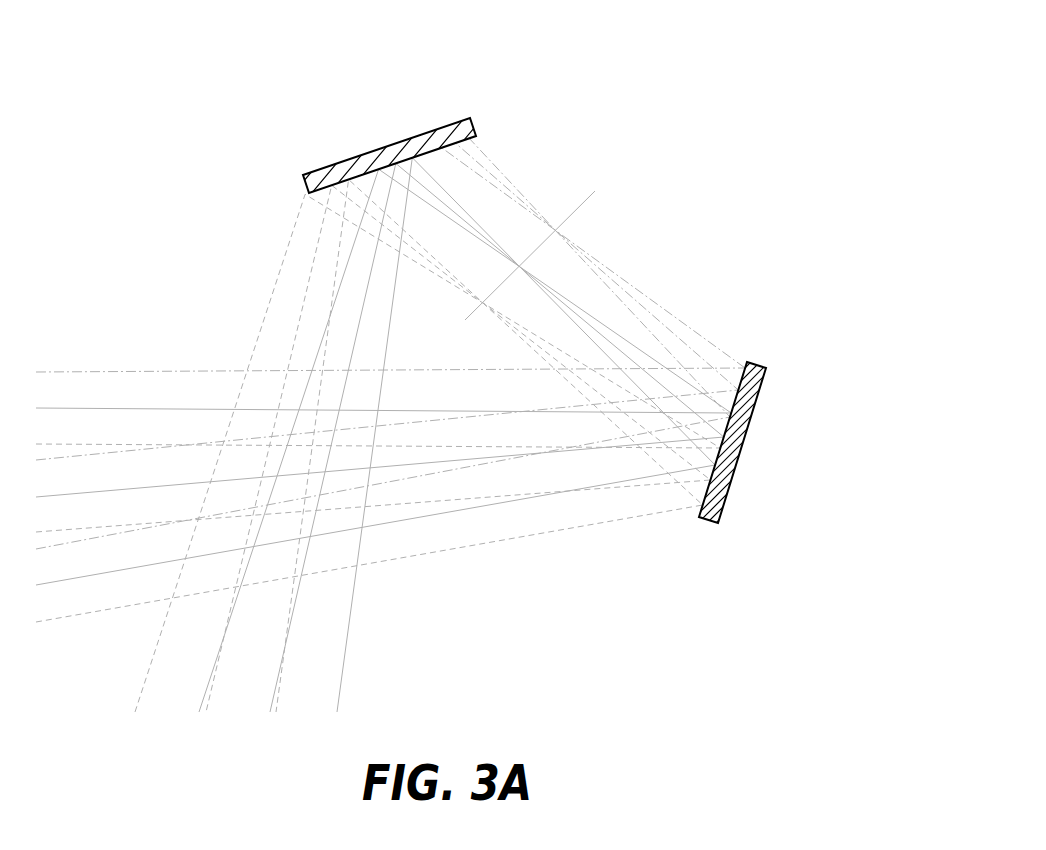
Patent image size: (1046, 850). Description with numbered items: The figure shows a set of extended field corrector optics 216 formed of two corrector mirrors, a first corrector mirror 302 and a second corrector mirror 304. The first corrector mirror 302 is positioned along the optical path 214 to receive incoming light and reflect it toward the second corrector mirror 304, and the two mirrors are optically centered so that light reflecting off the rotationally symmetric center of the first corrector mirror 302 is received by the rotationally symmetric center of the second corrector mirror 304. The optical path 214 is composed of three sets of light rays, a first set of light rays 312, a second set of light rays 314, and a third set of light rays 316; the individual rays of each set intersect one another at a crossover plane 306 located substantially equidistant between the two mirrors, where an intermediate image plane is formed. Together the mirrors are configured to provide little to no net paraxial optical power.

The set of extended field corrector optics 216 is at (640, 50).
The optical path 214 is at (193, 370).
The first corrector mirror 302 is at (732, 430).
The second corrector mirror 304 is at (395, 157).
The crossover plane 306 is at (572, 212).
The first set of light rays 312 is at (557, 353).
The second set of light rays 314 is at (593, 318).
The third set of light rays 316 is at (497, 163).